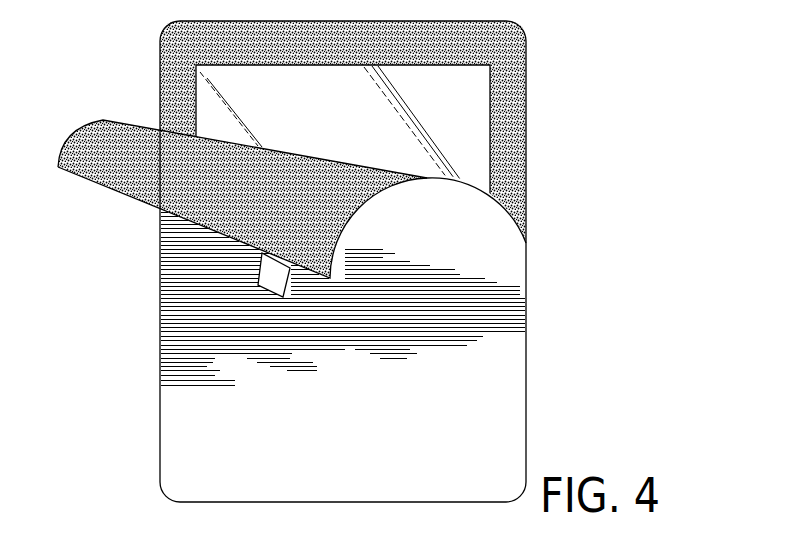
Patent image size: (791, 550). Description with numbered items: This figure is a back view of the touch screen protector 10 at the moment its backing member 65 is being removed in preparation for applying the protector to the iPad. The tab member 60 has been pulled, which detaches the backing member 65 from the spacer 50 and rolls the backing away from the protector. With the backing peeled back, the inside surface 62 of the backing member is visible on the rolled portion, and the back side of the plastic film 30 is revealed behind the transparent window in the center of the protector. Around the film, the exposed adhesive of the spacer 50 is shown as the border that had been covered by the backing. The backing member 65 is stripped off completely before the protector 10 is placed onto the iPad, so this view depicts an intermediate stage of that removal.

The protector 10 is at (636, 91).
The plastic film 30 is at (343, 131).
The spacer 50 is at (507, 97).
The tab member 60 is at (272, 275).
The inside surface of the backing member 62 is at (123, 142).
The backing member 65 is at (333, 444).